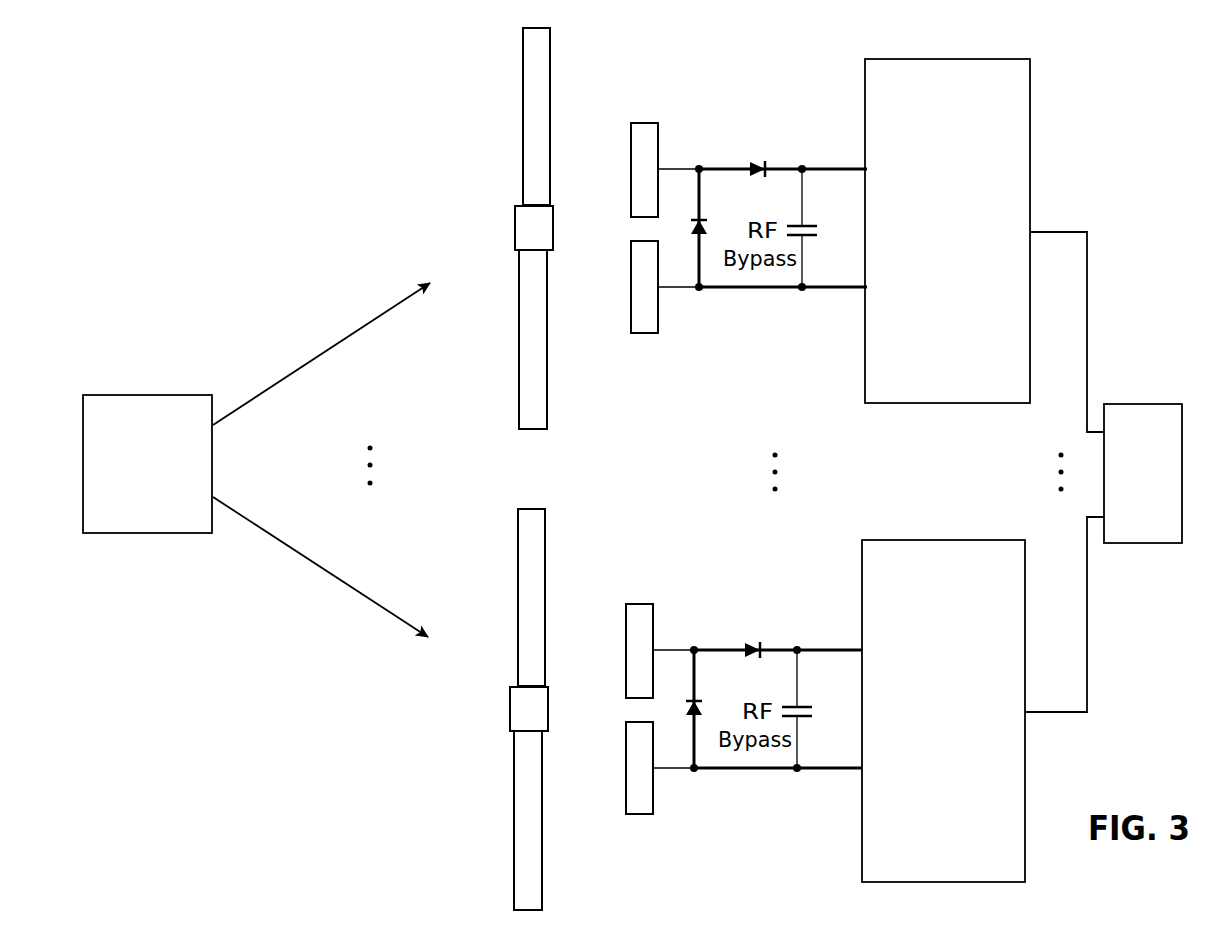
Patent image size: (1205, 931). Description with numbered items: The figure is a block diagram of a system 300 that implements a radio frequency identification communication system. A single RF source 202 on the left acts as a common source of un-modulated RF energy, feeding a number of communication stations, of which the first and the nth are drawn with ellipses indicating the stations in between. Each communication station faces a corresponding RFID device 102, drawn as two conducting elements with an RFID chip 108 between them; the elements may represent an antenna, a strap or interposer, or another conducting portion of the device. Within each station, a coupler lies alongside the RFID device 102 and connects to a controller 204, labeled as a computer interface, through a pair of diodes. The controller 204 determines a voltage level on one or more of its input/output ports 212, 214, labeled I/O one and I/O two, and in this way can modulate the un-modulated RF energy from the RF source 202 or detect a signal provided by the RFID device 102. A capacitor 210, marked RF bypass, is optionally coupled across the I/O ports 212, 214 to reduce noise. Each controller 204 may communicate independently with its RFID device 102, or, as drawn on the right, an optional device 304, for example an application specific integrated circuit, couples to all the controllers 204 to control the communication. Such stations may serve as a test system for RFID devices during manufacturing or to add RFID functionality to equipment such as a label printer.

The system 300 is at (98, 702).
The RF source 202 is at (146, 395).
The RFID device 102 is at (498, 78).
The RFID chip 108 is at (553, 222).
The capacitor 210 is at (810, 228).
The controller 204 is at (907, 62).
The input/output port 212 is at (866, 167).
The input/output port 214 is at (866, 291).
The device 304 is at (1164, 487).